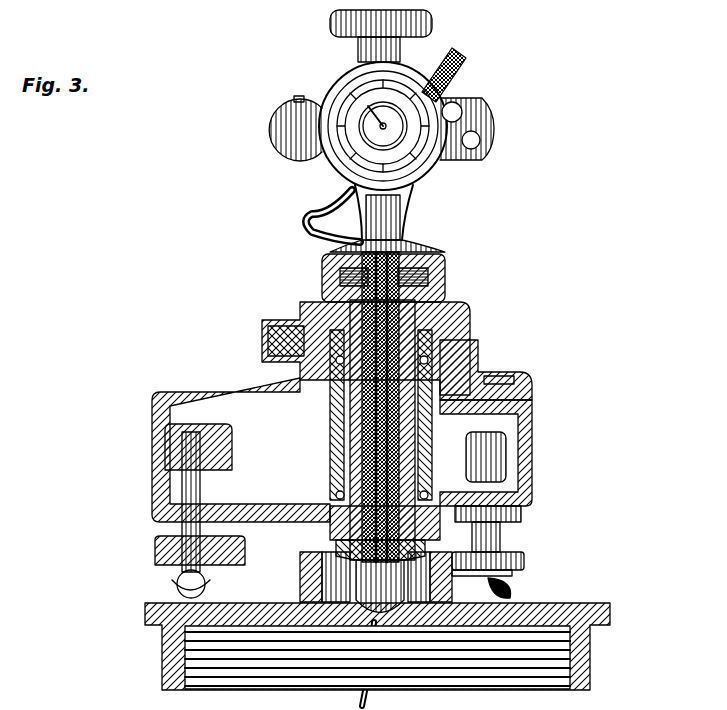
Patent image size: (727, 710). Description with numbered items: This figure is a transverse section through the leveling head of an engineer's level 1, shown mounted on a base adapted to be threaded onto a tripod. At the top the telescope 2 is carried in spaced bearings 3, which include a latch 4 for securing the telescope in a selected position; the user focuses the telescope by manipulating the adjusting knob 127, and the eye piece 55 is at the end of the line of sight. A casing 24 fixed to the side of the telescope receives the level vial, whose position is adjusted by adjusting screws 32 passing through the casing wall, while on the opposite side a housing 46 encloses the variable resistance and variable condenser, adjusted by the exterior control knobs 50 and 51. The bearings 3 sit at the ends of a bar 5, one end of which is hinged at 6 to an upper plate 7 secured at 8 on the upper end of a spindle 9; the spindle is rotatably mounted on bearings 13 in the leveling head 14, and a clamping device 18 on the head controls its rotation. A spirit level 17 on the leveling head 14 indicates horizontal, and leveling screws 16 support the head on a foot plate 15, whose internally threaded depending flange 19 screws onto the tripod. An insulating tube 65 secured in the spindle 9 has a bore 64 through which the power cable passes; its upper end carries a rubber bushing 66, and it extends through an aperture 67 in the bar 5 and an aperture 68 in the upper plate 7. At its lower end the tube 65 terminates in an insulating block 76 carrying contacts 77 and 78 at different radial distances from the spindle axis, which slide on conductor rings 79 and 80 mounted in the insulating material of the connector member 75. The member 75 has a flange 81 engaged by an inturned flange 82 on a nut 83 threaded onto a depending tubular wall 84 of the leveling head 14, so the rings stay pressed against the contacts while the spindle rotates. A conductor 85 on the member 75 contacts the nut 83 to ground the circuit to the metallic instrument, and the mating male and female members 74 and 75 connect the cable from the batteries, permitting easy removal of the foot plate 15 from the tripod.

The adjusting knob 127 is at (432, 18).
The latch 4 is at (462, 60).
The telescope 2 is at (318, 90).
The spaced bearings 3 is at (322, 86).
The adjusting screws 32 is at (298, 96).
The casing 24 is at (268, 132).
The control knob 50 is at (460, 108).
The housing 46 is at (494, 128).
The control knob 51 is at (480, 144).
The eye piece 55 is at (368, 128).
The bushing 66 is at (402, 230).
The bar 5 is at (440, 250).
The hinge 6 is at (322, 275).
The aperture 67 is at (440, 270).
The body 1 is at (448, 300).
The aperture 68 is at (445, 308).
The upper plate 7 is at (305, 302).
The securing point 8 is at (300, 310).
The spindle 9 is at (262, 322).
The bearings 13 is at (470, 335).
The clamping device 18 is at (268, 340).
The spirit level 17 is at (500, 376).
The leveling head 14 is at (205, 392).
The bore 64 is at (405, 415).
The insulating tube 65 is at (345, 430).
The nut 83 is at (450, 490).
The depending tubular wall 84 is at (300, 495).
The block 76 is at (320, 498).
The contact 77 is at (330, 520).
The inturned flange 82 is at (300, 560).
The conductor ring 79 is at (336, 546).
The conductor 85 is at (404, 580).
The male connector member 74 is at (366, 628).
The female connector member 75 is at (398, 612).
The contact 78 is at (455, 516).
The conductor ring 80 is at (500, 536).
The flange 81 is at (512, 574).
The leveling screws 16 is at (155, 548).
The foot plate 15 is at (145, 606).
The internally threaded depending flange 19 is at (590, 672).